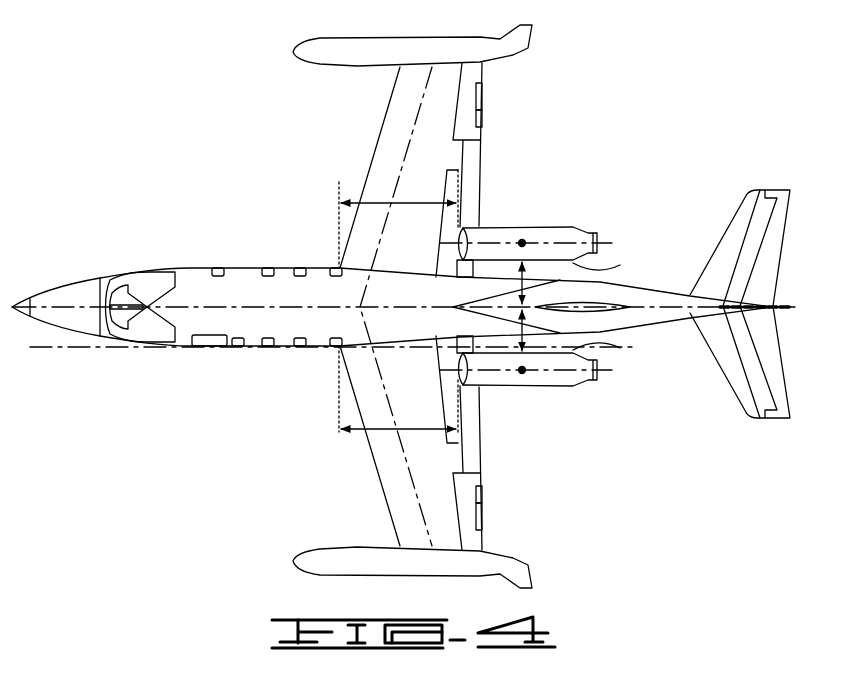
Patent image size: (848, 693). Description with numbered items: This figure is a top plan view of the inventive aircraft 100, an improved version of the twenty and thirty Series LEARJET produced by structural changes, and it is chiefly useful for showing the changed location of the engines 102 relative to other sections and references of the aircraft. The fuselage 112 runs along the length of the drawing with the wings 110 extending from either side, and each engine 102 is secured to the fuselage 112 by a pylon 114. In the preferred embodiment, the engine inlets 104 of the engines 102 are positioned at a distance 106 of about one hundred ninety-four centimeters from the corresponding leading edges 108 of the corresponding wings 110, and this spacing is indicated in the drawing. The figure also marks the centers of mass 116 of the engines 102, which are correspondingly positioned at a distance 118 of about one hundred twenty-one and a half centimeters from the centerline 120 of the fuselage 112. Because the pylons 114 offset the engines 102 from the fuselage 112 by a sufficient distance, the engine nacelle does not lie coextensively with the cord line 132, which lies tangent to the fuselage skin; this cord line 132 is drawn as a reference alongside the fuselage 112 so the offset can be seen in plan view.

The aircraft 100 is at (403, 306).
The engines 102 is at (559, 307).
The engine inlets 104 is at (464, 225).
The distance 106 is at (372, 201).
The leading edges 108 is at (337, 266).
The wings 110 is at (423, 131).
The fuselage 112 is at (181, 266).
The pylon 114 is at (592, 269).
The centers of mass 116 is at (522, 240).
The distance 118 is at (453, 306).
The centerline 120 is at (243, 305).
The cord line 132 is at (83, 348).